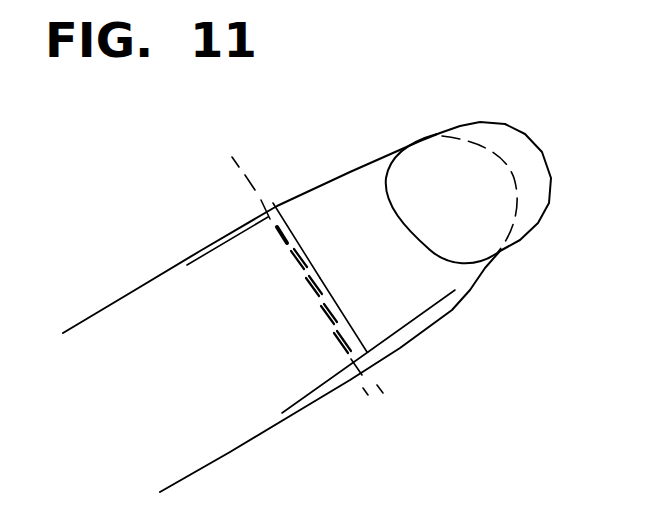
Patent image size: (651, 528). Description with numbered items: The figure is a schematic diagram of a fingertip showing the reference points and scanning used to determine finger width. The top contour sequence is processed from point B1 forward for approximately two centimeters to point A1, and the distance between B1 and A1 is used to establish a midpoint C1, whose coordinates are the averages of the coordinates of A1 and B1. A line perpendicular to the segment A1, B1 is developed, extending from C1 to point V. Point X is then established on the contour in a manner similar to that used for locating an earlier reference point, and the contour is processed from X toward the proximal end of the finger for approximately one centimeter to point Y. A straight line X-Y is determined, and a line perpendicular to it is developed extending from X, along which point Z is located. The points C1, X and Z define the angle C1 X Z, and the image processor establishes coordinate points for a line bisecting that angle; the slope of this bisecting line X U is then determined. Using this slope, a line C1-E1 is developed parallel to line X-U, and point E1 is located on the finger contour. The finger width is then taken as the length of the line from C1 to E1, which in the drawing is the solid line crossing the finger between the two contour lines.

The point V is at (237, 160).
The point X is at (246, 202).
The point E1 is at (290, 223).
The midpoint C1 is at (366, 333).
The point Y is at (223, 256).
The point A1 is at (310, 384).
The point B1 is at (411, 310).
The point Z is at (357, 406).
The point U is at (389, 403).